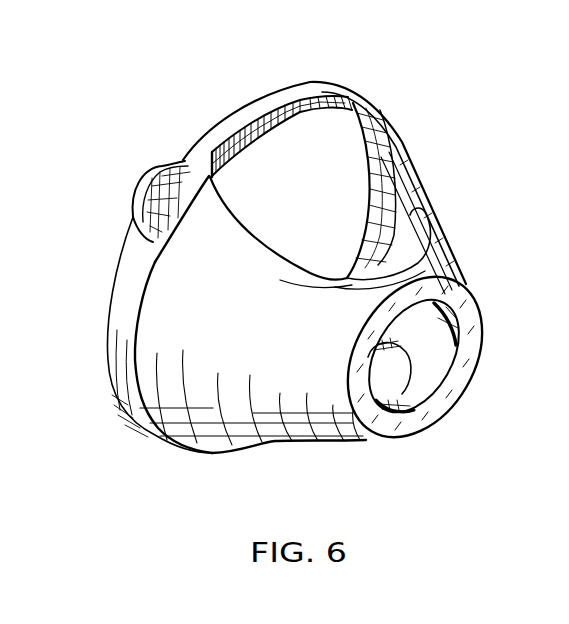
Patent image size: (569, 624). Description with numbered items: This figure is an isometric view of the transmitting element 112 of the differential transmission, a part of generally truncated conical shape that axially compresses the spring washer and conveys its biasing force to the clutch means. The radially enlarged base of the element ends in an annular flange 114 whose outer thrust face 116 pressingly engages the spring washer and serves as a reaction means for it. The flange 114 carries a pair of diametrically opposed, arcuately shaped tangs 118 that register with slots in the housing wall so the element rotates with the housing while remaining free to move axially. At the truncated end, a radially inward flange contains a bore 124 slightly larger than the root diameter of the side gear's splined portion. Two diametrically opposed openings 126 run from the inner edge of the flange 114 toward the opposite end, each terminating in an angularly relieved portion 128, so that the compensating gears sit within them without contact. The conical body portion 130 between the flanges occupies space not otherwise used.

The transmitting element 112 is at (445, 192).
The annular flange 114 is at (283, 93).
The thrust face 116 is at (107, 327).
The tangs 118 is at (143, 193).
The bore 124 is at (415, 398).
The openings 126 is at (391, 172).
The angularly relieved portion 128 is at (437, 240).
The body portion 130 is at (273, 427).